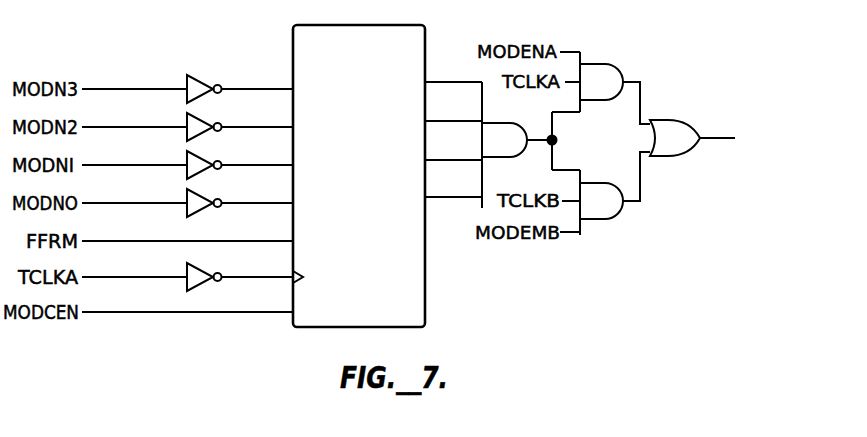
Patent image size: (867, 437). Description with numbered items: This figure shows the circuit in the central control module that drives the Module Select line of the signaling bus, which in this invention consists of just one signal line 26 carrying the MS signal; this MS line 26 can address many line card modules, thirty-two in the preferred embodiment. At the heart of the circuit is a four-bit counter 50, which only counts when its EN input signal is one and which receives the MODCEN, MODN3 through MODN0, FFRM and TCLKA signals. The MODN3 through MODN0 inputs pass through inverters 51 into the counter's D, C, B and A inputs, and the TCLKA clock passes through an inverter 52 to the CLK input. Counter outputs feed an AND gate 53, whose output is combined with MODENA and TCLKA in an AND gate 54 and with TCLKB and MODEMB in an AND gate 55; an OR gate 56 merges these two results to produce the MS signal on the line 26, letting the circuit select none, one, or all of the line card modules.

The signal line 26 is at (704, 137).
The counter 50 is at (425, 285).
The inverters 51 is at (199, 69).
The inverter 52 is at (200, 267).
The AND gate 53 is at (494, 124).
The AND gate 54 is at (605, 63).
The AND gate 55 is at (606, 220).
The OR gate 56 is at (671, 121).